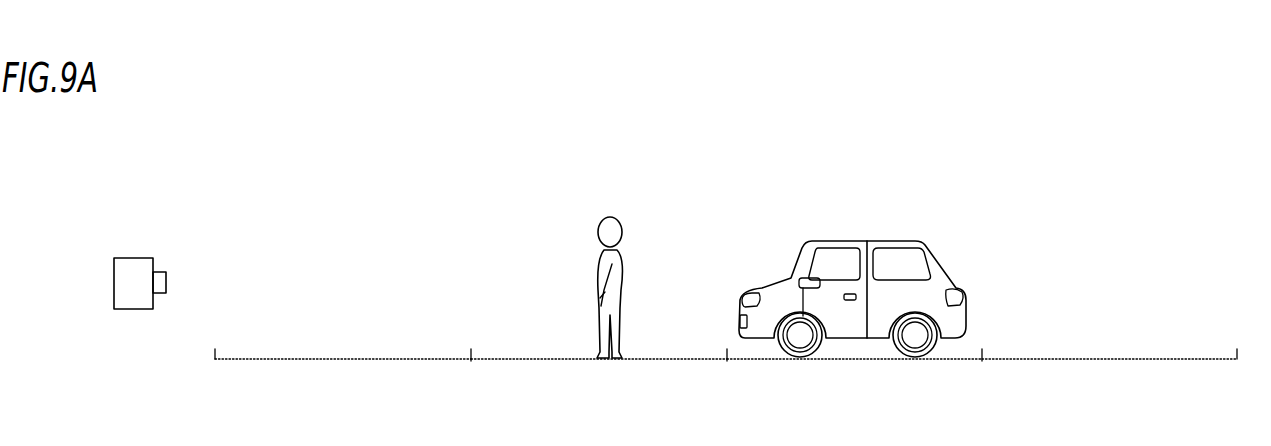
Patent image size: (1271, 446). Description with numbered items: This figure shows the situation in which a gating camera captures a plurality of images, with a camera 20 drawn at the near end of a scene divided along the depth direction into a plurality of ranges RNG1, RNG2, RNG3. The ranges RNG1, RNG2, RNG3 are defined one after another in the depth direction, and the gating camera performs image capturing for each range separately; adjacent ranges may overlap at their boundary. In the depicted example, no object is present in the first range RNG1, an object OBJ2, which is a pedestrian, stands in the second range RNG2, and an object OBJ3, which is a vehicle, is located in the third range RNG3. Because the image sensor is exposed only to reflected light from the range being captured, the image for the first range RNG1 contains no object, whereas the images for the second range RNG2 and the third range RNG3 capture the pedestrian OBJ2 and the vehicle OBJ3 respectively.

The imaging device / camera 20 is at (137, 258).
The object (pedestrian) OBJ2 is at (622, 217).
The object (vehicle) OBJ3 is at (877, 240).
The range RNG1 is at (343, 378).
The range RNG2 is at (599, 378).
The range RNG3 is at (854, 378).